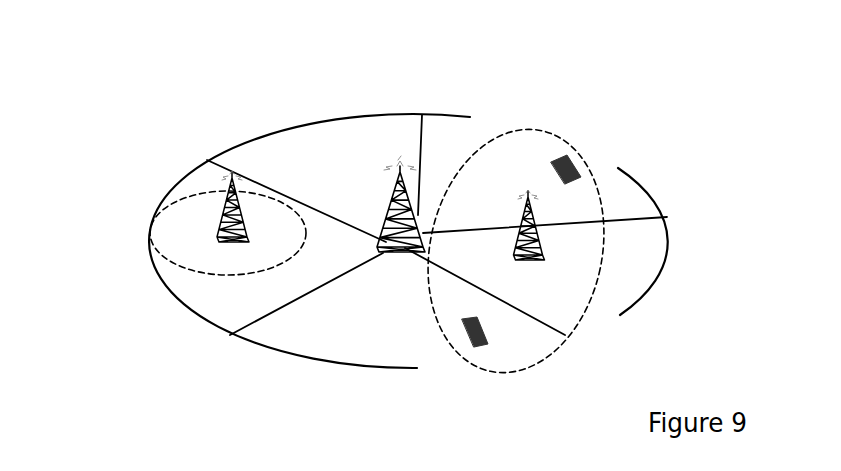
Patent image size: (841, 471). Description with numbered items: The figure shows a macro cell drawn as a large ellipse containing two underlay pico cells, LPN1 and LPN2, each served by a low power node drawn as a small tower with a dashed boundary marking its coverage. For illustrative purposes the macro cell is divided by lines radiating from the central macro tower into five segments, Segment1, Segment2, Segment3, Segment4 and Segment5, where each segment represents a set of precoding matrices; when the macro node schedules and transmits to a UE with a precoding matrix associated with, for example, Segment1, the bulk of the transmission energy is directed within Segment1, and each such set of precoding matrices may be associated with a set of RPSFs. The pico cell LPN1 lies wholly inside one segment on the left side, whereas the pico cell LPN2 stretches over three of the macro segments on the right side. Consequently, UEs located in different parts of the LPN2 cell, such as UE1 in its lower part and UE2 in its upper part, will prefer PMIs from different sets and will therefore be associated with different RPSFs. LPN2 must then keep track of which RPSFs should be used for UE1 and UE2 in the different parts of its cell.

The segment 1 Segment1 is at (207, 290).
The segment 2 Segment2 is at (290, 337).
The segment 3 Segment3 is at (620, 305).
The segment 4 Segment4 is at (468, 152).
The segment 5 Segment5 is at (303, 137).
The pico cell LPN1 is at (207, 235).
The pico cell LPN2 is at (540, 255).
The user equipment UE1 is at (495, 332).
The user equipment UE2 is at (573, 186).